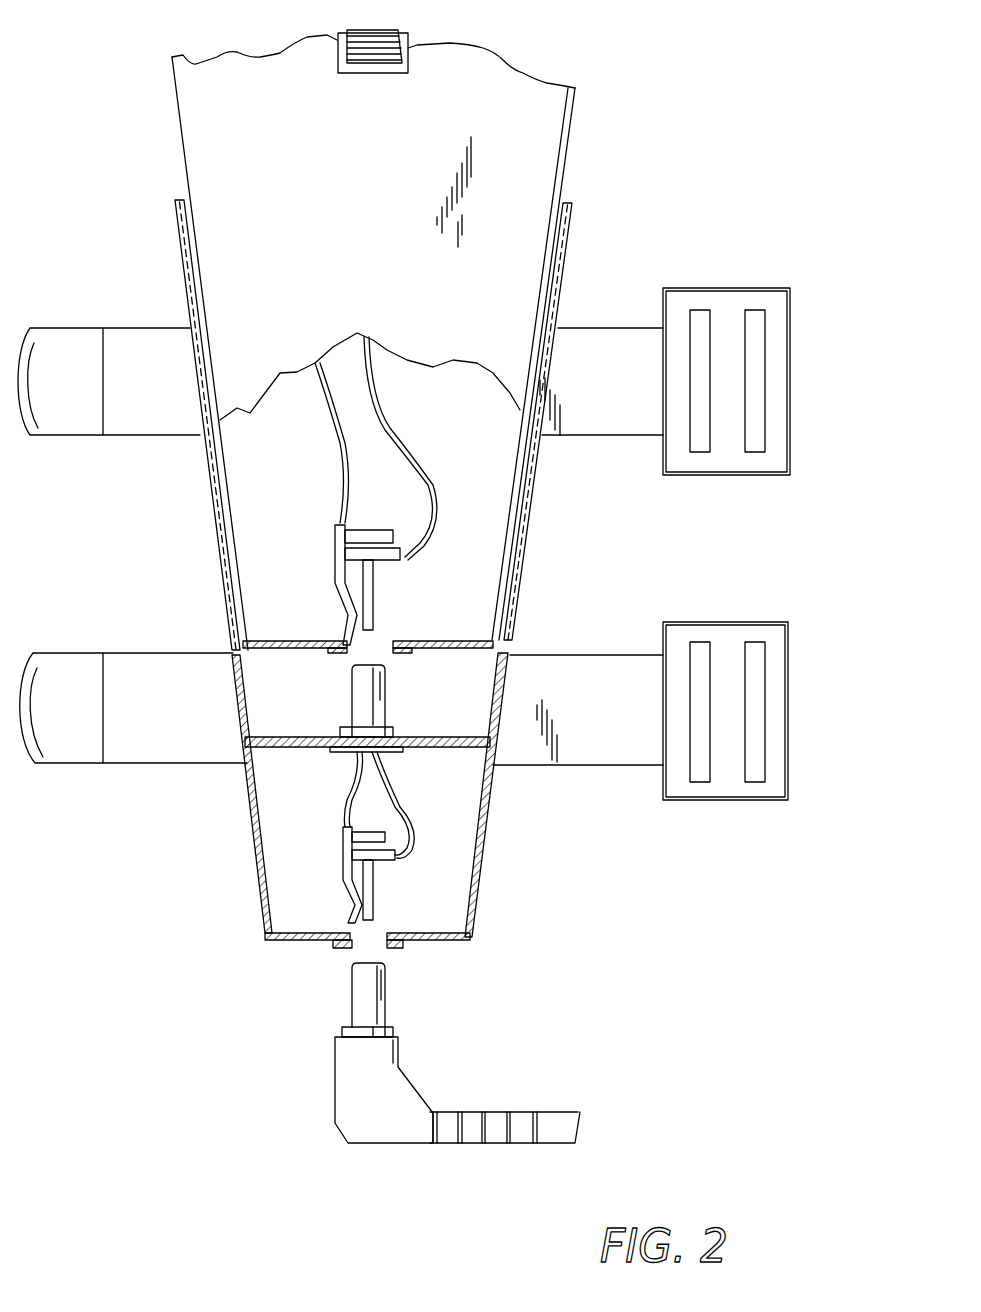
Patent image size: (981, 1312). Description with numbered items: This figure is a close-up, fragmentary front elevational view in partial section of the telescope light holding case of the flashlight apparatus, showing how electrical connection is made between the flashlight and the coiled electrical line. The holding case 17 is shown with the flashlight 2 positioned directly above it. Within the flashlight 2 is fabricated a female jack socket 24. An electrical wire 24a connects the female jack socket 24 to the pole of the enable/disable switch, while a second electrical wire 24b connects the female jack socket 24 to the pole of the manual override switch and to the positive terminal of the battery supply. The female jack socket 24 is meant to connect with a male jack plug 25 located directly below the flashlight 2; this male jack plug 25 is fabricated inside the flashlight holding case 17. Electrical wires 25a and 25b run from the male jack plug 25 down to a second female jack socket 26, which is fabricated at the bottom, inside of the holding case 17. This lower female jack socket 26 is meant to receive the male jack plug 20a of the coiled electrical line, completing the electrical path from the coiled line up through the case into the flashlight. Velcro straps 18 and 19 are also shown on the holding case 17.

The flashlight 2 is at (537, 117).
The holding case 17 is at (175, 222).
The Velcro strap 18 is at (735, 308).
The Velcro strap 19 is at (733, 637).
The female jack socket 24 is at (335, 568).
The electrical wire 24a is at (335, 447).
The electrical wire 24b is at (382, 403).
The male jack plug 25 is at (370, 695).
The electrical wire 25a is at (345, 797).
The electrical wire 25b is at (402, 797).
The female jack socket 26 is at (343, 867).
The male jack plug 20a is at (355, 1090).